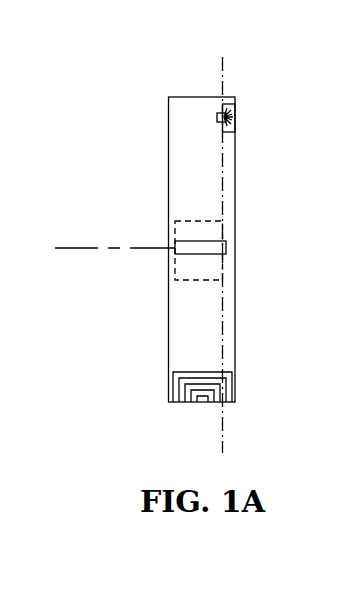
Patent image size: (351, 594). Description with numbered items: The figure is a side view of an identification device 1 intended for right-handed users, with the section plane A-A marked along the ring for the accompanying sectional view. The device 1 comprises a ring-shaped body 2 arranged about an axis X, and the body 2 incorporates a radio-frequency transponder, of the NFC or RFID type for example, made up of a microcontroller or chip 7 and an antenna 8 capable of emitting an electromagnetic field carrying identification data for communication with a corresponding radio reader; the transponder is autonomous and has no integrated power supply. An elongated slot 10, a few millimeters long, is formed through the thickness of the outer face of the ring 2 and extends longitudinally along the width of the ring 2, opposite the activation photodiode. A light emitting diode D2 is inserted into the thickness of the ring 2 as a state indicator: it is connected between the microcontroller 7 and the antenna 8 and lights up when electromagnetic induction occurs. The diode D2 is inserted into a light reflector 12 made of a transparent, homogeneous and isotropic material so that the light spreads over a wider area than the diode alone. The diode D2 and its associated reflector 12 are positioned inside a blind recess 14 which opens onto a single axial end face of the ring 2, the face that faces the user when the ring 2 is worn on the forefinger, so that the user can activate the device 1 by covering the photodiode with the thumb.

The identification device 1 is at (118, 60).
The ring-shaped body 2 is at (182, 160).
The microcontroller 7 is at (175, 221).
The antenna 8 is at (188, 393).
The elongated slot 10 is at (190, 247).
The light reflector 12 is at (222, 131).
The blind recess 14 is at (235, 127).
The light emitting diode D2 is at (229, 120).
The axis X is at (95, 248).
The sectional plane A- A is at (258, 82).